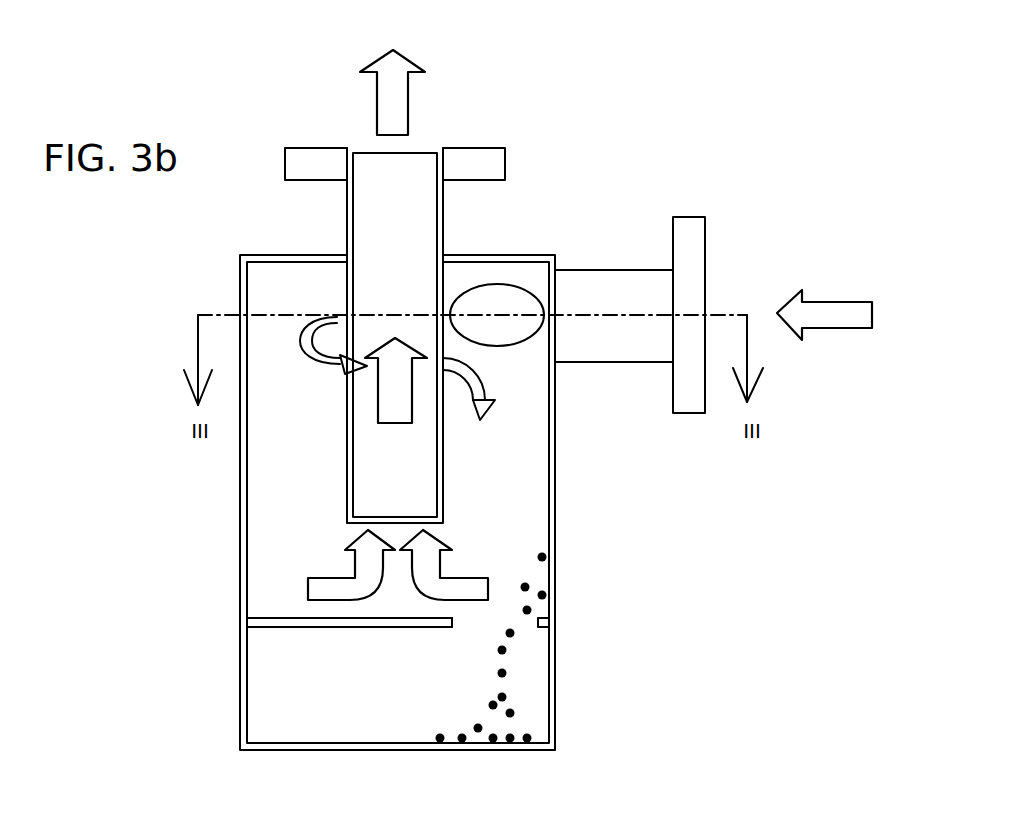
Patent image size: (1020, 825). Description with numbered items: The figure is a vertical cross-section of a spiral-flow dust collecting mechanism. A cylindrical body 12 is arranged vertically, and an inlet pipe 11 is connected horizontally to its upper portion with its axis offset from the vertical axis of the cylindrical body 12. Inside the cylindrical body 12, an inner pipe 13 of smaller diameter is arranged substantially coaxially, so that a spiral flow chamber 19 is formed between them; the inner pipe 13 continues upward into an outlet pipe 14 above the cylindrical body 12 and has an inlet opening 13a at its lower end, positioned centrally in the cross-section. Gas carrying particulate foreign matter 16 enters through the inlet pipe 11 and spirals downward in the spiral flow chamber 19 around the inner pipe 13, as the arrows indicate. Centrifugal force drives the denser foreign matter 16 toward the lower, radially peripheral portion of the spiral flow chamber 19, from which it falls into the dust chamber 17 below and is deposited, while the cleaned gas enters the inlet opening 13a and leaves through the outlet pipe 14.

The inlet pipe 11 is at (632, 270).
The cylindrical body 12 is at (555, 450).
The inner pipe 13 is at (443, 498).
The inlet opening 13a is at (350, 531).
The outlet pipe 14 is at (347, 215).
The foreign matter 16 is at (527, 585).
The dust chamber 17 is at (528, 693).
The spiral flow chamber 19 is at (492, 437).